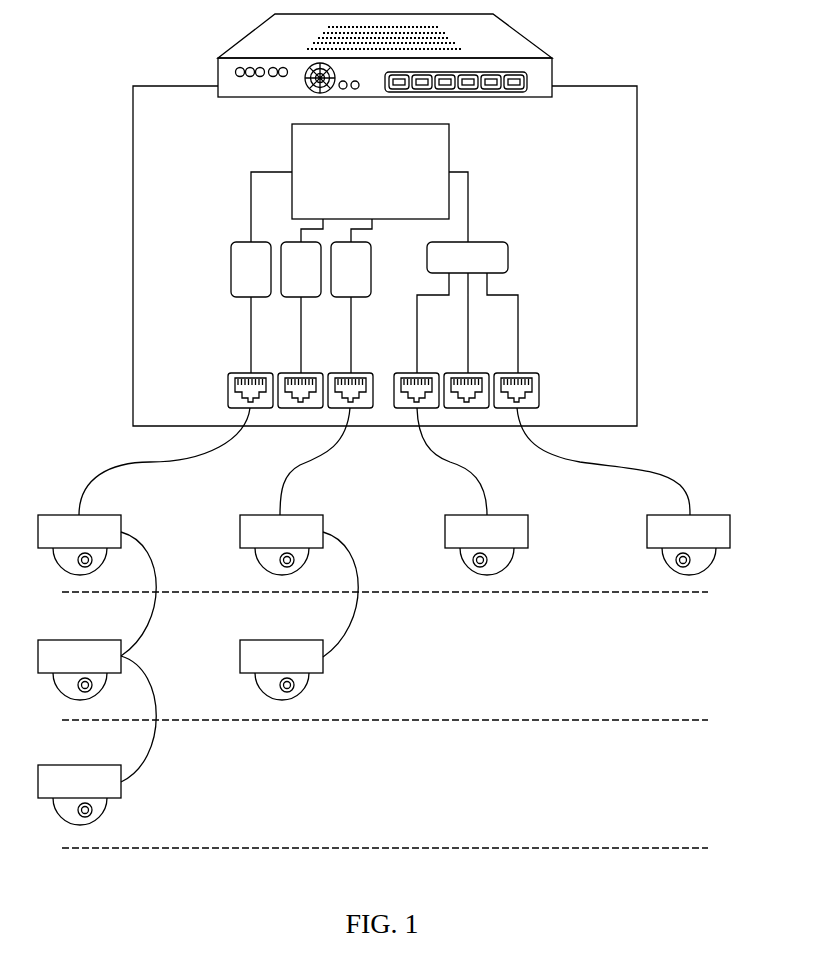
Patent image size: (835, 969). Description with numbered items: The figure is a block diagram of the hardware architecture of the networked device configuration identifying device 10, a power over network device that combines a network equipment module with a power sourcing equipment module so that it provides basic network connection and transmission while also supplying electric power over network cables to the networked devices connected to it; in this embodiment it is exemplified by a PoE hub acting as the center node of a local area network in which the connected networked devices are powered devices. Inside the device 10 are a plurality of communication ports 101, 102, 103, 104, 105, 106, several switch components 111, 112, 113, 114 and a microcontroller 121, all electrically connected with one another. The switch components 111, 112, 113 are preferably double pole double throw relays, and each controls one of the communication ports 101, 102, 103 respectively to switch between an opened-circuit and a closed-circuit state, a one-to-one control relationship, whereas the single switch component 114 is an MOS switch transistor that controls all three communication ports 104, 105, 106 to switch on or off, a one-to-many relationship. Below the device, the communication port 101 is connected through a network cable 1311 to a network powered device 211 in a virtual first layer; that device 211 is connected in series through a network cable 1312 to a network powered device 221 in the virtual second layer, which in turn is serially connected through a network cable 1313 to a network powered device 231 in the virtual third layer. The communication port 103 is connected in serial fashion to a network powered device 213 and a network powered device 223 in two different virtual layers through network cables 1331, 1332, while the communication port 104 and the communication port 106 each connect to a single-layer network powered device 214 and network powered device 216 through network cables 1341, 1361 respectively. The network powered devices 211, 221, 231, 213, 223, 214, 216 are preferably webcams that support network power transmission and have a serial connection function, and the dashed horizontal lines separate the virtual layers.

The networked device configuration identifying device 10 is at (385, 220).
The microcontroller (MCU) 121 is at (370, 171).
The switch component 111 is at (261, 272).
The switch component 112 is at (302, 296).
The switch component 113 is at (351, 296).
The switch component 114 is at (467, 272).
The communication port 101 is at (245, 373).
The communication port 102 is at (295, 373).
The communication port 103 is at (345, 373).
The communication port 104 is at (411, 373).
The communication port 105 is at (461, 373).
The communication port 106 is at (511, 373).
The network cable 1311 is at (164, 461).
The network cable 1312 is at (164, 594).
The network cable 1313 is at (164, 719).
The network cable 1331 is at (318, 461).
The network cable 1332 is at (366, 594).
The network cable 1341 is at (450, 461).
The network cable 1361 is at (603, 461).
The network powered device 211 is at (79, 545).
The network powered device 213 is at (281, 545).
The network powered device 214 is at (486, 545).
The network powered device 216 is at (688, 545).
The network powered device 221 is at (79, 670).
The network powered device 223 is at (281, 670).
The network powered device 231 is at (79, 795).